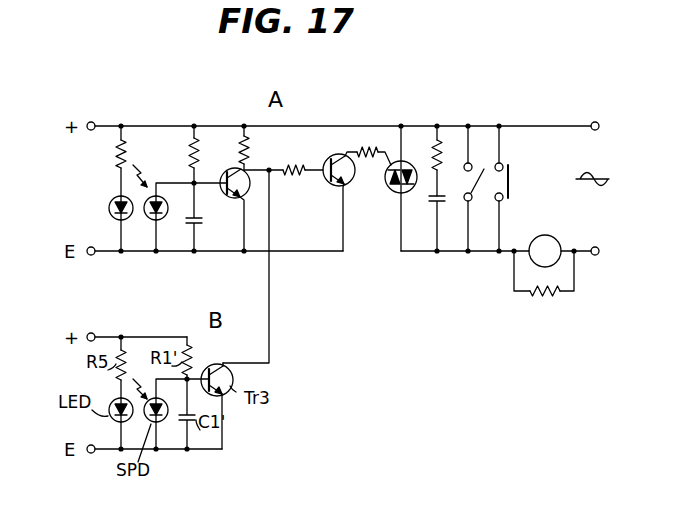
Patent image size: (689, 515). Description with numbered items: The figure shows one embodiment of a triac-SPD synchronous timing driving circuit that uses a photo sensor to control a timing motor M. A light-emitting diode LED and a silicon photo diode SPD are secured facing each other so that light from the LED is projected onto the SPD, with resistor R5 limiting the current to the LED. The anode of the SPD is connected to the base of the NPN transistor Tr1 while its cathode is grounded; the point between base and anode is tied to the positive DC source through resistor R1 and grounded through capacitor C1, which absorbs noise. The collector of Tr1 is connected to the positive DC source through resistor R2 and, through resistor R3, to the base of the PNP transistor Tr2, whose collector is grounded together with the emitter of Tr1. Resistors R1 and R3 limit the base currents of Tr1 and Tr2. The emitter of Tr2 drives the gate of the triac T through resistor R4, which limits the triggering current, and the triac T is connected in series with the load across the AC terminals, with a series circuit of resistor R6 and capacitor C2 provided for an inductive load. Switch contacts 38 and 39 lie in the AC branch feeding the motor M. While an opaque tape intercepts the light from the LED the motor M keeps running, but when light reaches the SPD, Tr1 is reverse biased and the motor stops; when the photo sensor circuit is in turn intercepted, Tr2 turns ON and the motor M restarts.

The switch / contact 38 is at (508, 181).
The switch 39 is at (480, 155).
The resistor R5 is at (116, 154).
The light-emitting diode LED is at (109, 208).
The silicon photo diode SPD is at (153, 221).
The resistor R1 is at (189, 152).
The capacitor C1 is at (200, 222).
The resistor R2 is at (239, 144).
The NPN transistor Tr1 is at (226, 197).
The resistor R3 is at (294, 165).
The PNP transistor Tr2 is at (328, 184).
The resistor R4 is at (367, 145).
The triac T is at (388, 188).
The resistor R6 is at (446, 150).
The capacitor C2 is at (428, 199).
The motor M is at (544, 265).